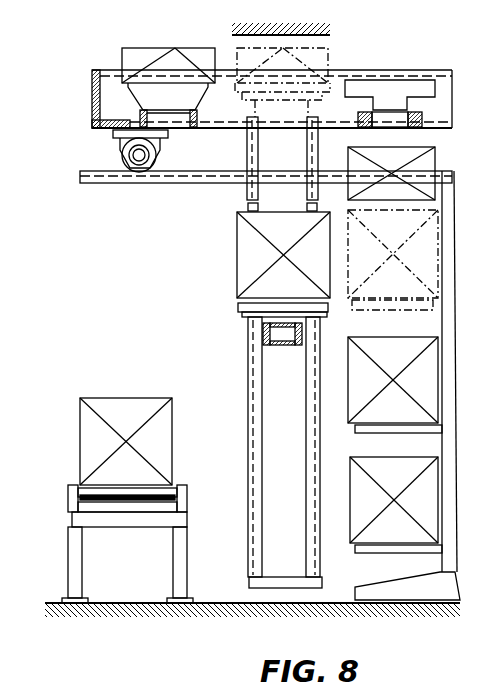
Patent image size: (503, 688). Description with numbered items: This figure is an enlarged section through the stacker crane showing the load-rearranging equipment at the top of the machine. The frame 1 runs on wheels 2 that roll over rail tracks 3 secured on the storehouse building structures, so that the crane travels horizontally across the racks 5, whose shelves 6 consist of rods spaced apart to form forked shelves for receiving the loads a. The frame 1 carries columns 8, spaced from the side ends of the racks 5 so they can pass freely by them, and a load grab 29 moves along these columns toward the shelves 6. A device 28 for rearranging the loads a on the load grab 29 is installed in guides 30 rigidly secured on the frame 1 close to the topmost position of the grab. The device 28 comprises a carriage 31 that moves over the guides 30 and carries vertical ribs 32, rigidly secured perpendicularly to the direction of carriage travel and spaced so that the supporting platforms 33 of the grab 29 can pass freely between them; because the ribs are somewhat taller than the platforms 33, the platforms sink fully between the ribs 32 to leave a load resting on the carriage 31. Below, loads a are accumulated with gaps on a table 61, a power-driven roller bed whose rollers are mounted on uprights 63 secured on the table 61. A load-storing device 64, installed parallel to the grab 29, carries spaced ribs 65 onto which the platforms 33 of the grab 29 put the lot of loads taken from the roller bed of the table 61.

The frame 1 is at (92, 86).
The wheels 2 is at (124, 161).
The rail tracks 3 is at (120, 183).
The racks 5 is at (451, 343).
The shelves 6 is at (414, 429).
The columns 8 is at (278, 564).
The device for rearranging loads 28 is at (408, 67).
The load grab 29 is at (241, 319).
The guides 30 is at (424, 116).
The carriage 31 is at (402, 128).
The vertical ribs 32 is at (364, 88).
The supporting platforms 33 is at (239, 305).
The table 61 is at (166, 578).
The uprights 63 is at (186, 508).
The load-storing device 64 is at (136, 120).
The ribs 65 is at (167, 90).
The loads a is at (428, 515).